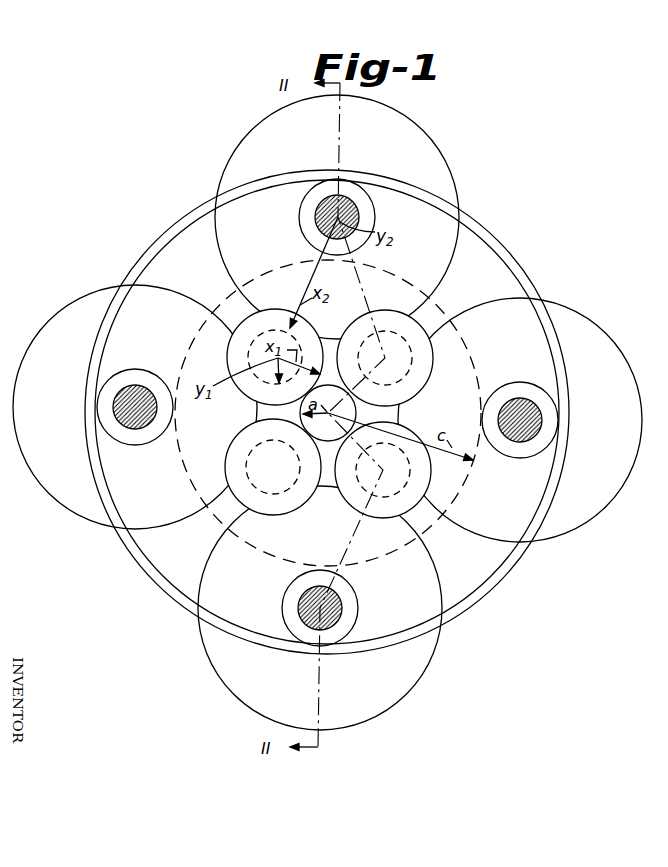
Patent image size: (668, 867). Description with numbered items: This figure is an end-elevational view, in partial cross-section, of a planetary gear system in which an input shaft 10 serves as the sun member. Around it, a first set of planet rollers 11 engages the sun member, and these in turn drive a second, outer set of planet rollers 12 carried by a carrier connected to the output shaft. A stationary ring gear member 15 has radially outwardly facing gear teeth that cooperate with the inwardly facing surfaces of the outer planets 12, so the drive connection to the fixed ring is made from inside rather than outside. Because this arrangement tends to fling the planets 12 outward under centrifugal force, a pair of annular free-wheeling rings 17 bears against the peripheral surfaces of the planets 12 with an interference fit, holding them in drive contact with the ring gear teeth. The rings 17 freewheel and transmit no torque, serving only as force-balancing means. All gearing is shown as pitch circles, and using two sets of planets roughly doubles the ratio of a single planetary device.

The input shaft 10 is at (353, 412).
The planet rollers 11 is at (250, 327).
The planet rollers 12 is at (437, 168).
The stationary ring gear member 15 is at (433, 532).
The annular free-wheeling rings 17 is at (497, 247).